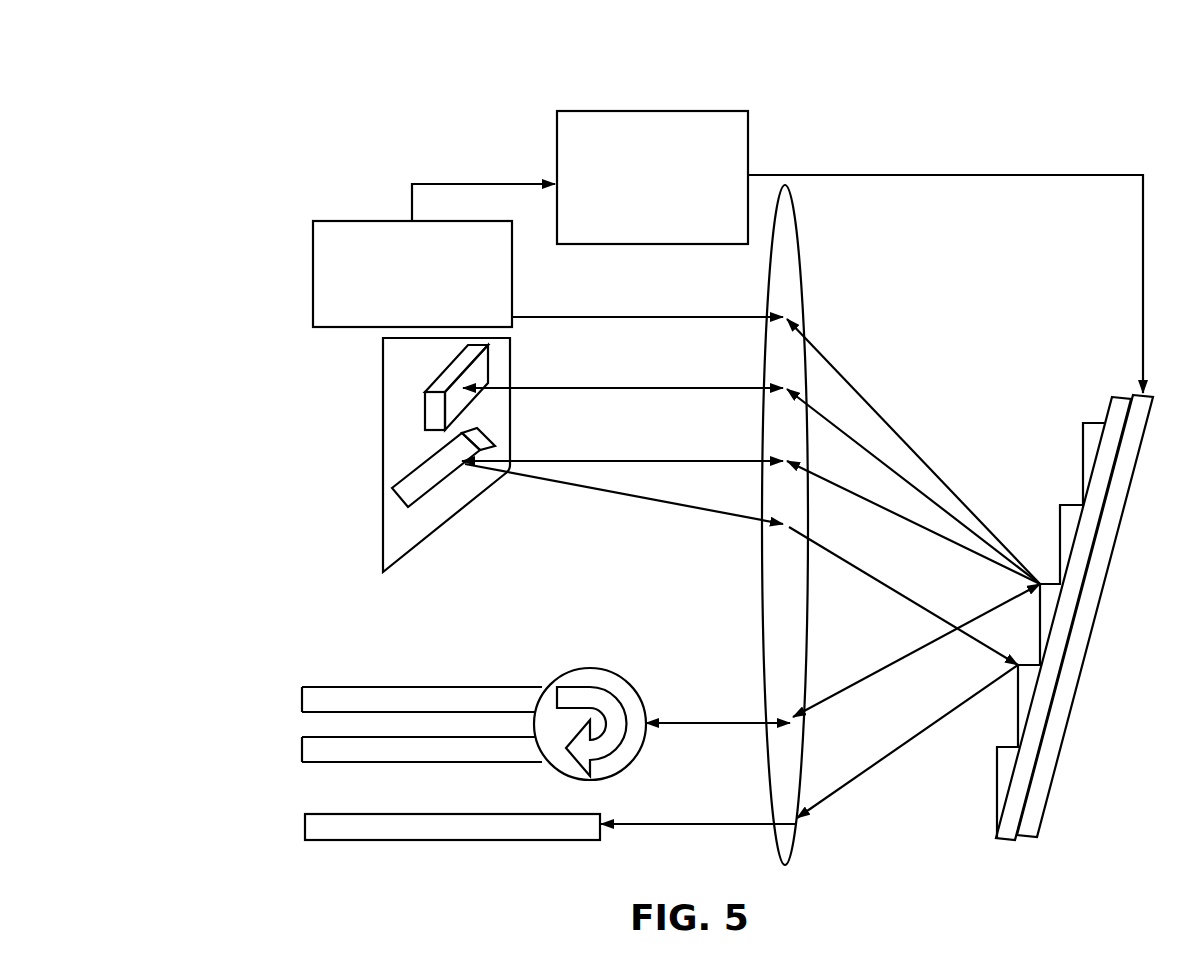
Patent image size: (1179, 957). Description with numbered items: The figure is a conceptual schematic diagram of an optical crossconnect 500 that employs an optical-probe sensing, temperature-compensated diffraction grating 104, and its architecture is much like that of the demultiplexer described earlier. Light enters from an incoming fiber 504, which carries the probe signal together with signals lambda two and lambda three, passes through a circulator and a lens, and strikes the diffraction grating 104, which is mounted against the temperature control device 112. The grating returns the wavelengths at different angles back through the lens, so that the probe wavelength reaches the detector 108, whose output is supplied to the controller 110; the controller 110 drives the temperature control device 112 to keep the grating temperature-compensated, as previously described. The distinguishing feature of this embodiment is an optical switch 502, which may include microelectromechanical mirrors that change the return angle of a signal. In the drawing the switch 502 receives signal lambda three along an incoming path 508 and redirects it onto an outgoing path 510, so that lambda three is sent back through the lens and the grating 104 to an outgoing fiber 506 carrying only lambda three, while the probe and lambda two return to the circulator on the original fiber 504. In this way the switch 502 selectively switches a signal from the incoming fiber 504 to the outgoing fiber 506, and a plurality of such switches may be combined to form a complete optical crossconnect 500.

The wavelength locker / optical system 500 is at (183, 158).
The controller 110 is at (654, 111).
The detector 108 is at (313, 273).
The optical switch 502 is at (383, 439).
The incoming path 508 is at (686, 459).
The outgoing path 510 is at (678, 508).
The incoming fiber 504 is at (415, 687).
The outgoing fiber 506 is at (430, 842).
The grating 104 is at (1010, 842).
The temperature control device 112 is at (1050, 793).